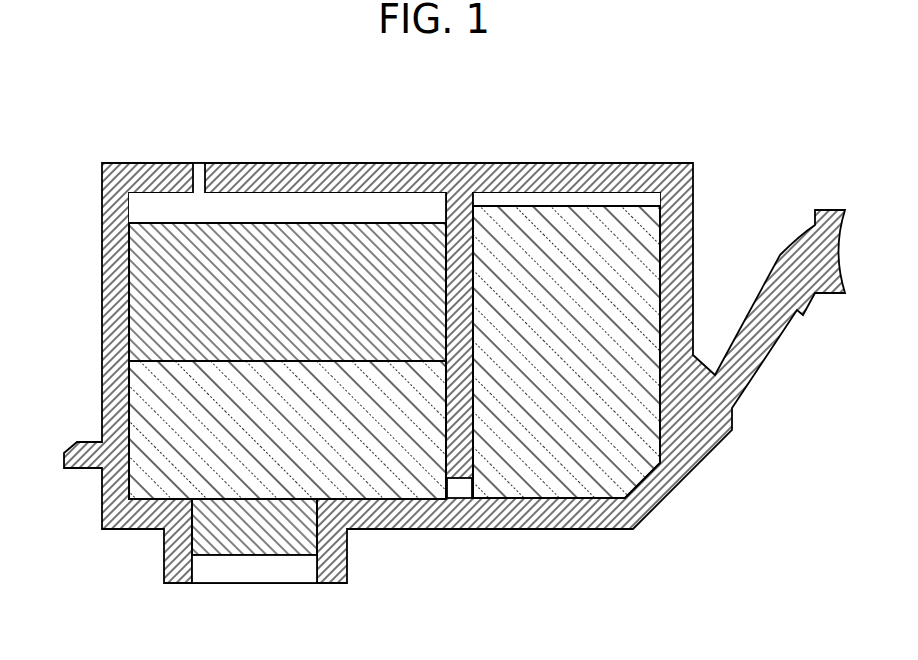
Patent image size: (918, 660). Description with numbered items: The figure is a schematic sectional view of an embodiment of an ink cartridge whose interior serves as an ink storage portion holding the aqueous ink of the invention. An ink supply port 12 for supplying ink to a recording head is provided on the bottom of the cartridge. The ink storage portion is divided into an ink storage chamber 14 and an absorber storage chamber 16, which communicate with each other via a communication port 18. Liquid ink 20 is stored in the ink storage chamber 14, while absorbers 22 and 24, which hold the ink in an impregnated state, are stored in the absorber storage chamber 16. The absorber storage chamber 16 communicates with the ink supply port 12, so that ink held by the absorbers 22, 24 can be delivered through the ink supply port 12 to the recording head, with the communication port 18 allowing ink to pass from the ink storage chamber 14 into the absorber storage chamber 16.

The ink supply port 12 is at (260, 570).
The ink storage chamber 14 is at (620, 202).
The absorber storage chamber 16 is at (268, 212).
The communication port 18 is at (462, 488).
The liquid ink 20 is at (600, 460).
The absorber 22 is at (153, 403).
The absorber 24 is at (188, 292).